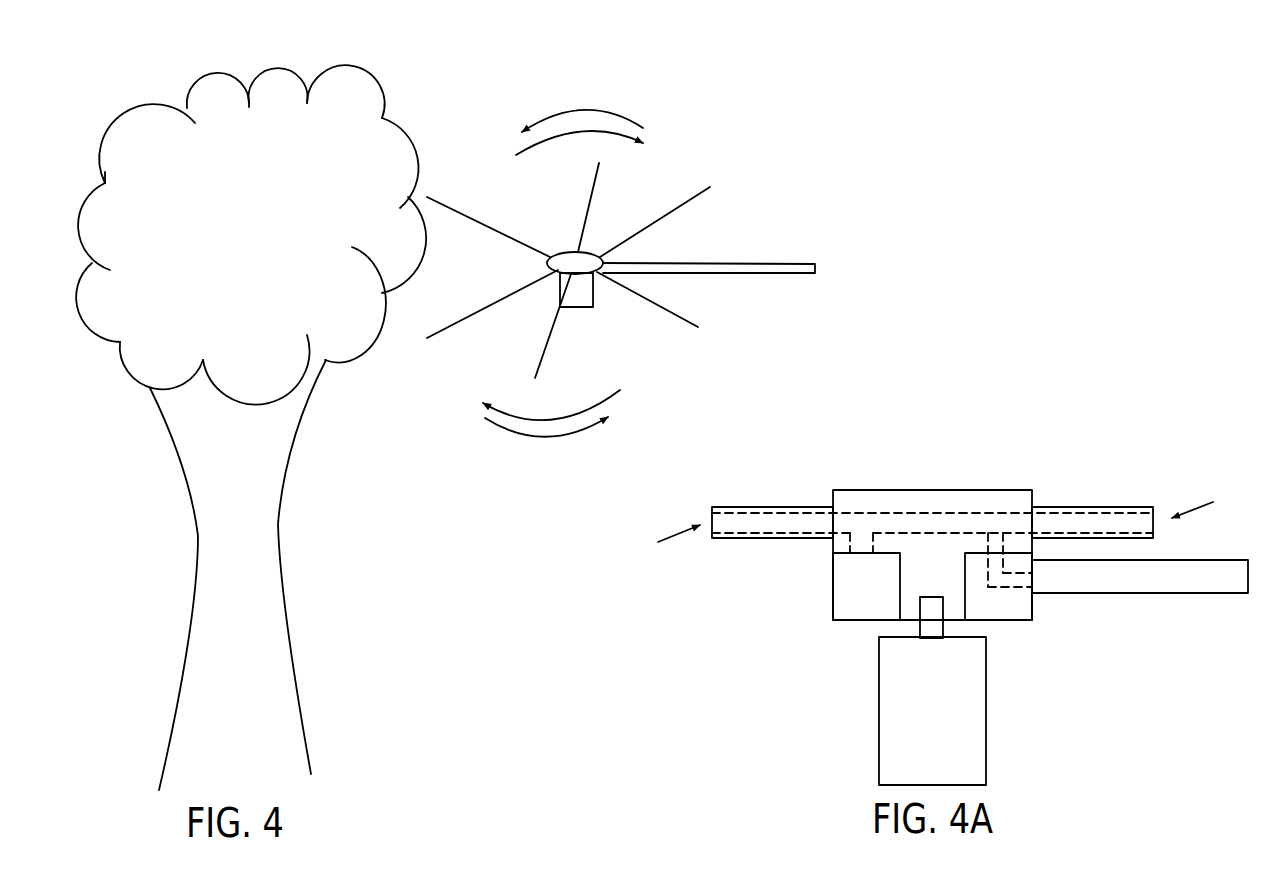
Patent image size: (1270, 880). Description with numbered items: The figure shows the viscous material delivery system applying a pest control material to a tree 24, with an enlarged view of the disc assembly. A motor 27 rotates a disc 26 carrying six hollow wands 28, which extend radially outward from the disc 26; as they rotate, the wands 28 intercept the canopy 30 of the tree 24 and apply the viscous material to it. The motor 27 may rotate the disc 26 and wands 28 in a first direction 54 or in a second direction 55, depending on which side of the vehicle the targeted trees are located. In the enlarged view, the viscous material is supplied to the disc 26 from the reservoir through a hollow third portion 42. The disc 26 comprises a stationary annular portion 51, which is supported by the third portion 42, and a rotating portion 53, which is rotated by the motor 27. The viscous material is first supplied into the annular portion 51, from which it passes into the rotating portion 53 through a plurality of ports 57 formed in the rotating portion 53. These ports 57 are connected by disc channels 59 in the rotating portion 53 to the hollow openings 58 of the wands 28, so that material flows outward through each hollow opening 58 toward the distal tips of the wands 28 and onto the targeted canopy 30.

In FIG. 4, the tree 24 is at (253, 405).
In FIG. 4, the disc 26 is at (563, 253).
In FIG. 4A, the disc 26 is at (943, 592).
In FIG. 4, the motor 27 is at (587, 307).
In FIG. 4A, the motor 27 is at (987, 703).
In FIG. 4, the wand 28 is at (598, 178).
In FIG. 4A, the wand 28 is at (748, 538).
In FIG. 4, the canopy 30 is at (243, 240).
In FIG. 4, the third portion 42 is at (797, 262).
In FIG. 4A, the third portion 42 is at (1207, 593).
In FIG. 4A, the stationary annular portion 51 is at (868, 607).
In FIG. 4A, the rotating portion 53 is at (930, 490).
In FIG. 4, the first direction 54 is at (516, 155).
In FIG. 4, the second direction 55 is at (627, 117).
In FIG. 4A, the port 57 is at (842, 543).
In FIG. 4A, the hollow opening 58 is at (935, 524).
In FIG. 4A, the disc channel 59 is at (903, 520).